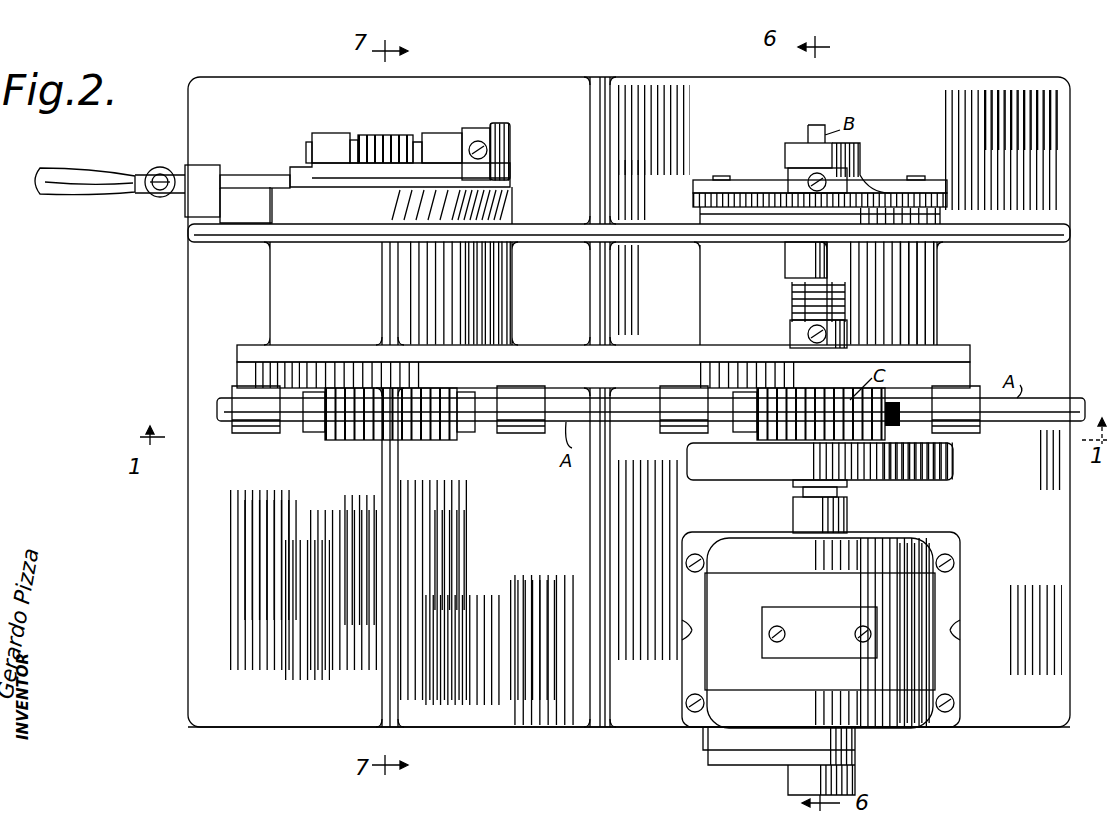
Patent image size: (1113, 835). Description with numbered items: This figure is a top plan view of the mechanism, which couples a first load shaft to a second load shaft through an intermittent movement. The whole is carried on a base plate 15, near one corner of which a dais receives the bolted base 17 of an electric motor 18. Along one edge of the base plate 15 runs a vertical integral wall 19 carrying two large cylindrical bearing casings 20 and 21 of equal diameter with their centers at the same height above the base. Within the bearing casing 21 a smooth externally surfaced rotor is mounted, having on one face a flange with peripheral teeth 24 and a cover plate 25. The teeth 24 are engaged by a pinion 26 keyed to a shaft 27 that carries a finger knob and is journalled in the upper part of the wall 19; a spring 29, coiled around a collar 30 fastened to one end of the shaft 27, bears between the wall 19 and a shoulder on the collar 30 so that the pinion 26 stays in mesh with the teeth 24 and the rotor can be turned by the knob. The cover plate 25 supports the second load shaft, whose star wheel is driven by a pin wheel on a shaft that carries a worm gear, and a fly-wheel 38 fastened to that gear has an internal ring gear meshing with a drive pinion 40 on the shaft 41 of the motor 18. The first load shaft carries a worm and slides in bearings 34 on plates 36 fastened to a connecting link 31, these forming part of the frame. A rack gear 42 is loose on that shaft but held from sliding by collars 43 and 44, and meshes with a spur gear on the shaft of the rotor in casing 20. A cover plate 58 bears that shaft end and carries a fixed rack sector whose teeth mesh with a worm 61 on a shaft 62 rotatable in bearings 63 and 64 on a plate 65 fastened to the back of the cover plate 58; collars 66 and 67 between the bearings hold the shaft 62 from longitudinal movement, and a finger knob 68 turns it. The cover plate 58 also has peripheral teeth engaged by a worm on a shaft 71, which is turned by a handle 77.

The base plate 15 is at (526, 580).
The base of electric motor 17 is at (945, 605).
The electric motor 18 is at (849, 570).
The vertical integral wall 19 is at (674, 240).
The bearing casing 20 is at (490, 308).
The bearing casing 21 is at (940, 296).
The peripheral teeth 24 is at (950, 197).
The cover plate 25 is at (920, 180).
The pinion 26 is at (848, 188).
The shaft 27 is at (805, 160).
The spring 29 is at (846, 300).
The collar 30 is at (848, 338).
The connecting link 31 is at (640, 350).
The bearing 34 is at (256, 434).
The plate 36 is at (1000, 352).
The fly-wheel 38 is at (720, 482).
The drive pinion 40 is at (840, 490).
The motor shaft 41 is at (795, 498).
The rack gear 42 is at (416, 442).
The collar 43 is at (314, 435).
The collar 44 is at (468, 435).
The cover plate 58 is at (500, 183).
The worm 61 is at (388, 136).
The shaft 62 is at (305, 150).
The bearing 63 is at (440, 134).
The bearing 64 is at (320, 132).
The plate 65 is at (444, 183).
The collar 66 is at (418, 140).
The collar 67 is at (354, 140).
The finger knob 68 is at (498, 126).
The shaft 71 is at (266, 176).
The handle 77 is at (100, 168).